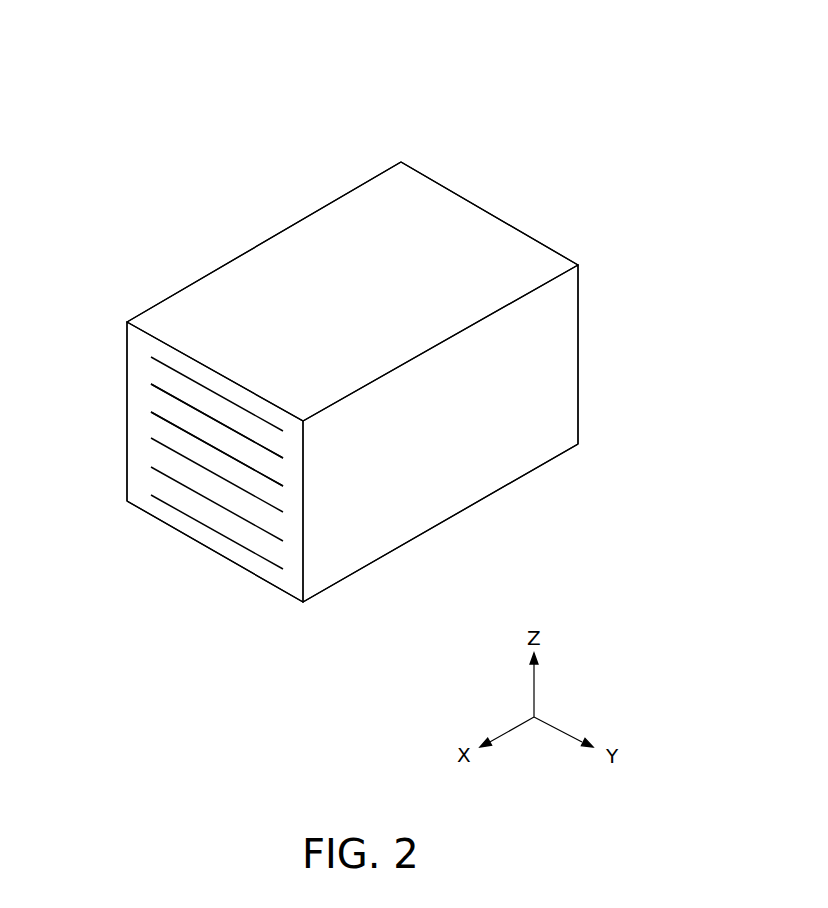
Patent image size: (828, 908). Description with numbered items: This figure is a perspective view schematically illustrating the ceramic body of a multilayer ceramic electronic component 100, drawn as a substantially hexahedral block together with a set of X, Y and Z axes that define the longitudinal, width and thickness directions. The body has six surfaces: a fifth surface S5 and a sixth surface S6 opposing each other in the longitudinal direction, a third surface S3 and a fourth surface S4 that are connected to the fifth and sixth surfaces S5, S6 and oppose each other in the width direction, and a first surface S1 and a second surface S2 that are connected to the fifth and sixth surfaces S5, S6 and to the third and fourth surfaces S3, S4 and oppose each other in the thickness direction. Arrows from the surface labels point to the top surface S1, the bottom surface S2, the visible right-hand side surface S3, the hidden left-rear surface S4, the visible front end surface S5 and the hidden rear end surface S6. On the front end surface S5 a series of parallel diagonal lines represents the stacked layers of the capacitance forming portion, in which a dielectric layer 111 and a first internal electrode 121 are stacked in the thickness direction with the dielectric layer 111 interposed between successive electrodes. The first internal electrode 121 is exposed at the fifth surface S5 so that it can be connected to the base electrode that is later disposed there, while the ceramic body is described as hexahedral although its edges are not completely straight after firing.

The multilayer ceramic electronic component 100 is at (152, 58).
The dielectric layer 111 is at (152, 400).
The first internal electrode 121 is at (152, 356).
The first surface S1 is at (355, 230).
The second surface S2 is at (361, 542).
The third surface S3 is at (550, 371).
The fourth surface S4 is at (200, 313).
The fifth surface S5 is at (215, 517).
The sixth surface S6 is at (468, 243).